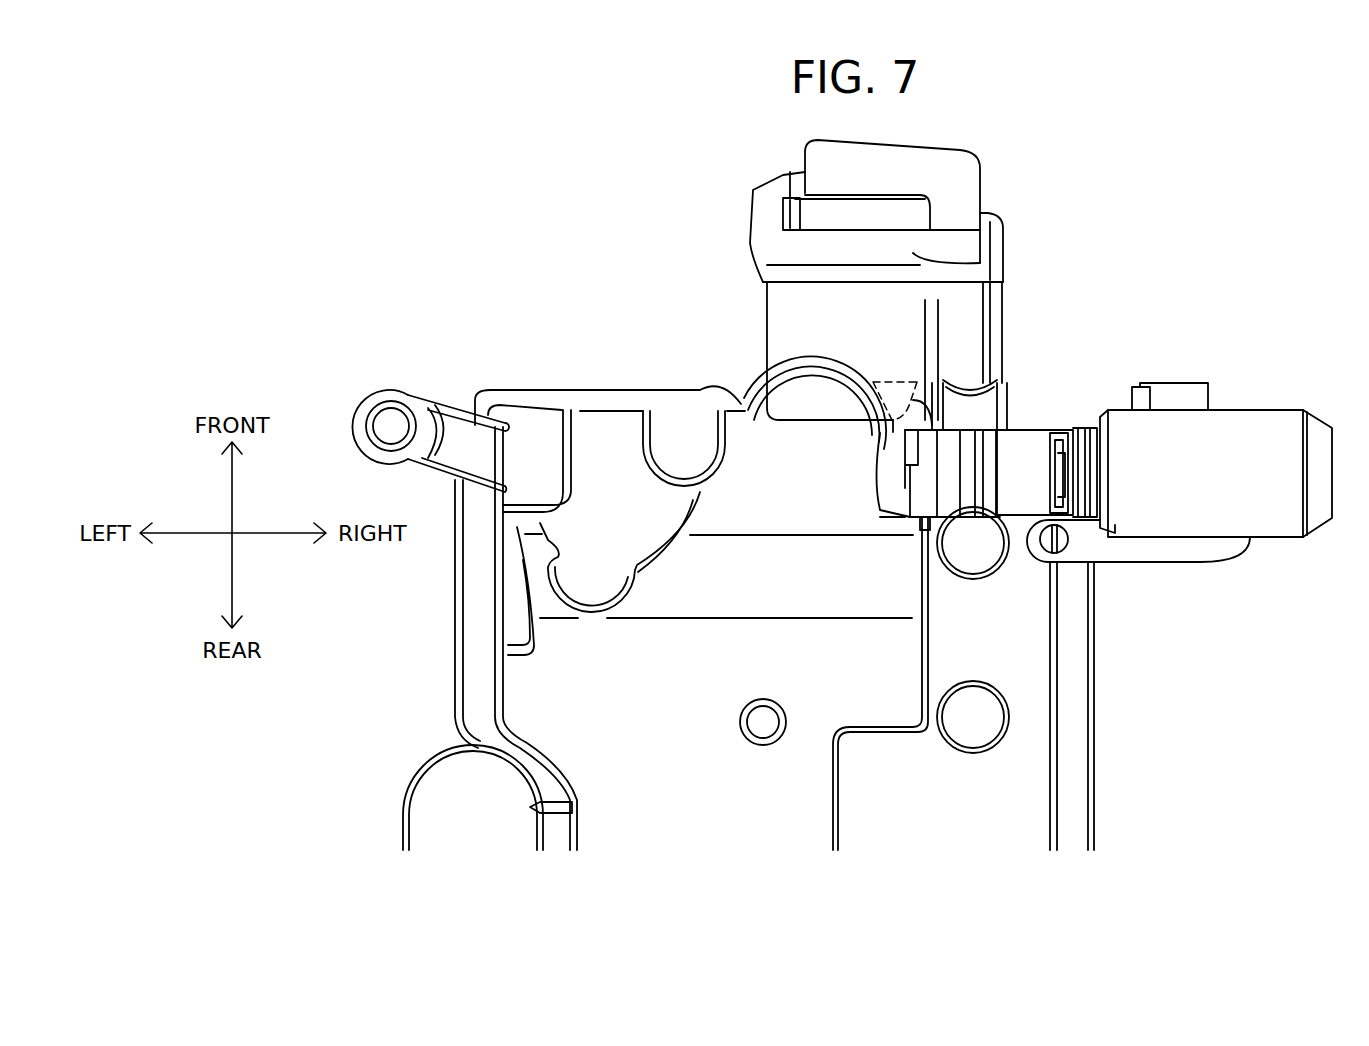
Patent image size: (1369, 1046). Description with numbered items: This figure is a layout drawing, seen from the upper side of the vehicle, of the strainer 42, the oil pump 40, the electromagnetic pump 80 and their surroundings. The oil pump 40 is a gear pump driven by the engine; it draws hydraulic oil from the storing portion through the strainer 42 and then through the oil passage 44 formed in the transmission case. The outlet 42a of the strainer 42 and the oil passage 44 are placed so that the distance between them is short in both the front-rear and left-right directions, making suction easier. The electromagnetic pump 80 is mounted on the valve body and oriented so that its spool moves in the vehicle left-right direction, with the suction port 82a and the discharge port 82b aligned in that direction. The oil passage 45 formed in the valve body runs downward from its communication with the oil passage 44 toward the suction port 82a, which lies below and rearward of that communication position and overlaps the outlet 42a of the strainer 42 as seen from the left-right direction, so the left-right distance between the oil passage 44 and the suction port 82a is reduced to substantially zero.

The oil pump 40 is at (833, 172).
The oil passage 44 is at (820, 335).
The outlet of the strainer 42a is at (737, 430).
The oil passage 45 is at (923, 463).
The suction port 82a is at (938, 468).
The electromagnetic pump 80 is at (1230, 437).
The discharge port 82b is at (1058, 503).
The strainer 42 is at (1013, 665).